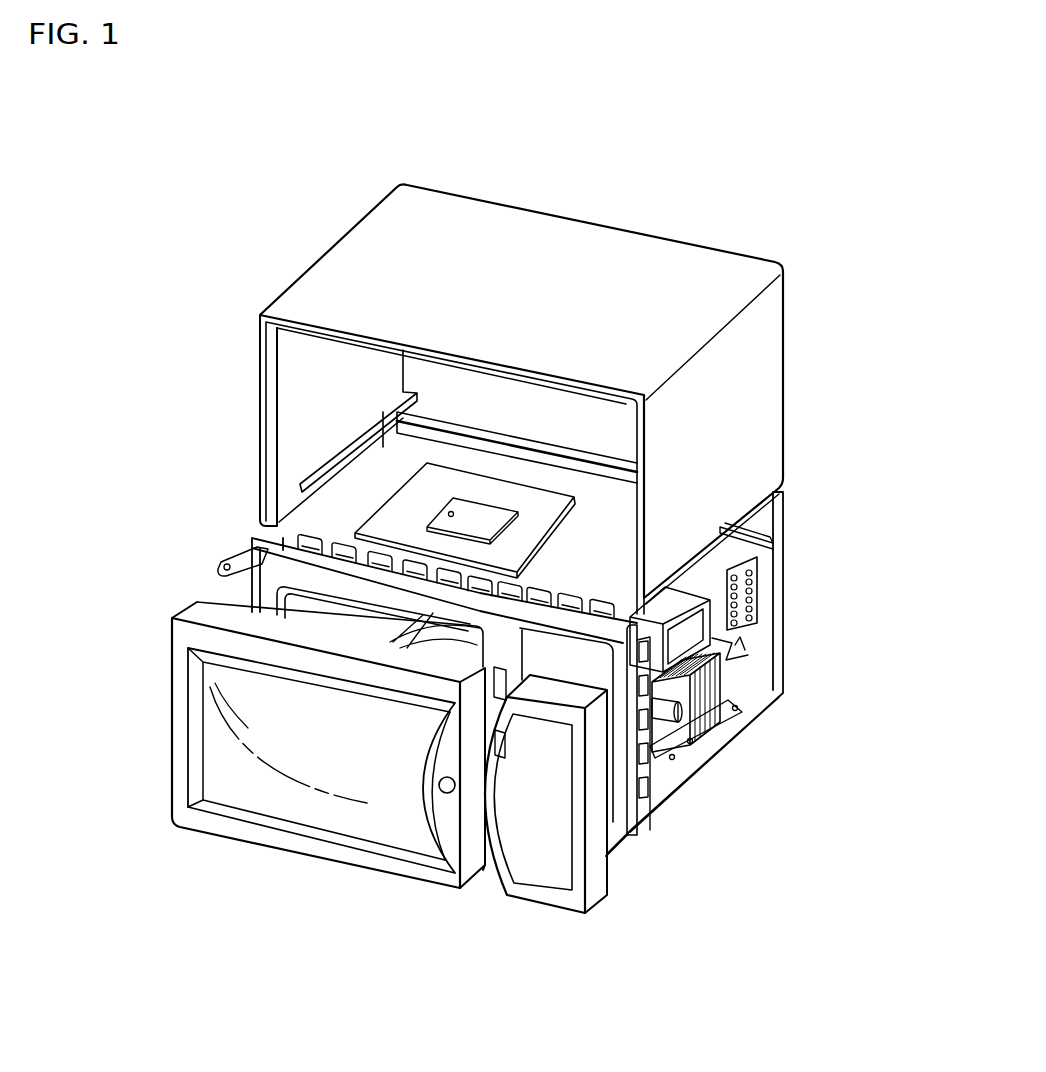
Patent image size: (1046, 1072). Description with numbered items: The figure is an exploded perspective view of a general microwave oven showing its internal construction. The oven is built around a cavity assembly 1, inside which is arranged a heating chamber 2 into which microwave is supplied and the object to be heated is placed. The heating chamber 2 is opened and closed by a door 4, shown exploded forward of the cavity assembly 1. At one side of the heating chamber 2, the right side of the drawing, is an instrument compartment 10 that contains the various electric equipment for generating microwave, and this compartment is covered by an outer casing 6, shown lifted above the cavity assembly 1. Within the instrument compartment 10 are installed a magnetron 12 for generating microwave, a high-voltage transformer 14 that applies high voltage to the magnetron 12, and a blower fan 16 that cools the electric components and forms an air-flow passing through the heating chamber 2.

The cavity assembly 1 is at (248, 525).
The heating chamber 2 is at (348, 627).
The door 4 is at (170, 737).
The outer casing 6 is at (636, 258).
The instrument compartment 10 is at (789, 651).
The magnetron 12 is at (732, 656).
The high-voltage transformer 14 is at (708, 717).
The blower fan 16 is at (728, 598).